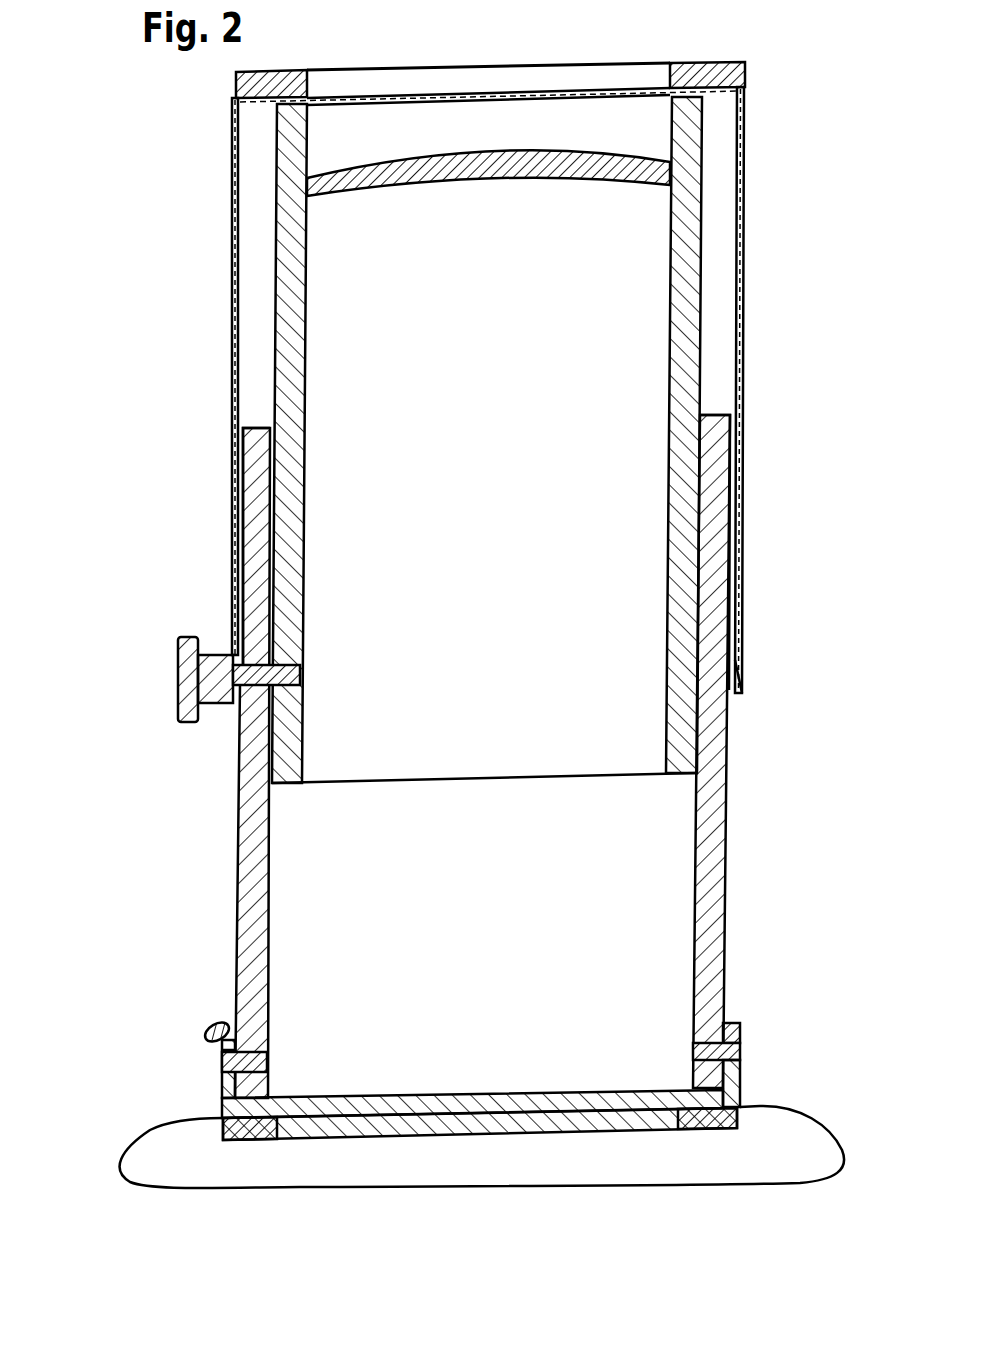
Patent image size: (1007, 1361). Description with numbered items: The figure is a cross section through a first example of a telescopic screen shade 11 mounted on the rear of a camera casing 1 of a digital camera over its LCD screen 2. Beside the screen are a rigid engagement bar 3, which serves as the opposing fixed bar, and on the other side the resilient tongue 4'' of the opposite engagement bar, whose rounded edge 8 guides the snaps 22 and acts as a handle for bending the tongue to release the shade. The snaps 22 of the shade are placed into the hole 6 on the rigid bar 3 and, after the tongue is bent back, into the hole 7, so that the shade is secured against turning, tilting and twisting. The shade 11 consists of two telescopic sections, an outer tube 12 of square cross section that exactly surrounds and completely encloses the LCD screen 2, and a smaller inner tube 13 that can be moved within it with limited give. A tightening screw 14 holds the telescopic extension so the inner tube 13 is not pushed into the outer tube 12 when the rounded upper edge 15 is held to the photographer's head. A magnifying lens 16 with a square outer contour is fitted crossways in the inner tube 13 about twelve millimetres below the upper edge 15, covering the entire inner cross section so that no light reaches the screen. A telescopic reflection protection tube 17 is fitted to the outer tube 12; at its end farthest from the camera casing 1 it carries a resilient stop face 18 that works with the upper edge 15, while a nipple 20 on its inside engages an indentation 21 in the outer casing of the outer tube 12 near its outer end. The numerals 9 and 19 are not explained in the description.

The camera casing 1 is at (160, 1142).
The LCD screen 2 is at (612, 1130).
The engagement bar 3 is at (742, 1085).
The resilient section 4'' is at (183, 1069).
The hole 6 is at (742, 1052).
The hole 7 is at (217, 1070).
The rounded edge 8 is at (215, 1024).
The bottom plate 9 is at (470, 1098).
The screen shade 11 is at (817, 212).
The outer tube 12 is at (712, 920).
The inner tube 13 is at (680, 275).
The tightening screw 14 is at (188, 637).
The upper edge 15 is at (306, 125).
The magnifying lens 16 is at (490, 186).
The reflection protection tube 17 is at (742, 345).
The resilient stop face 18 is at (705, 62).
The cover plate 19 is at (660, 97).
The nipple 20 is at (740, 655).
The indentation 21 is at (243, 480).
The snaps 22 is at (223, 1050).